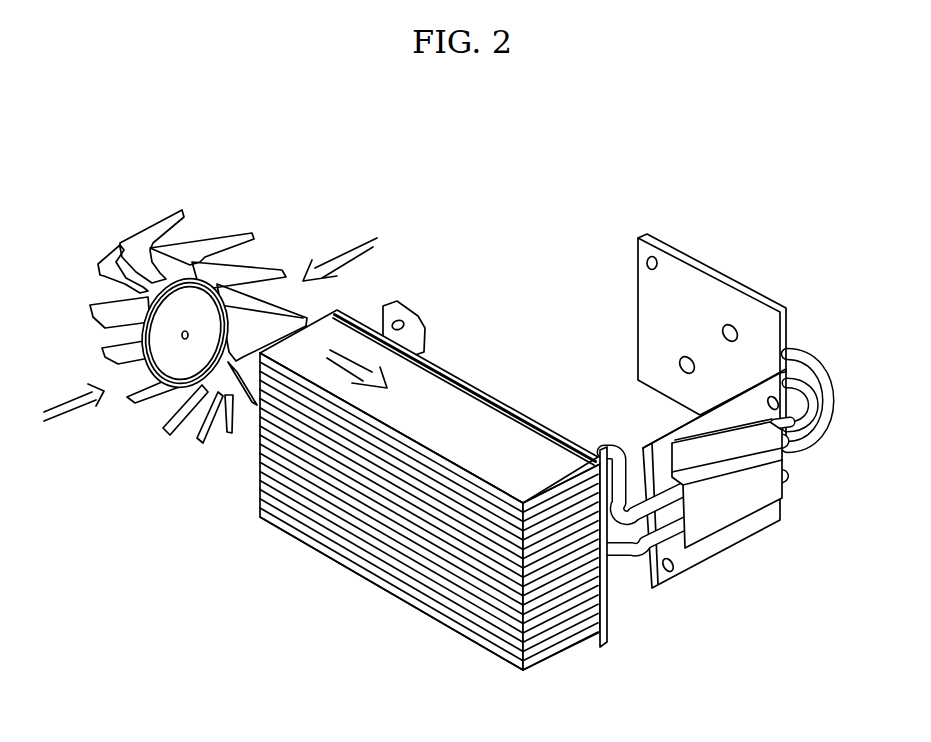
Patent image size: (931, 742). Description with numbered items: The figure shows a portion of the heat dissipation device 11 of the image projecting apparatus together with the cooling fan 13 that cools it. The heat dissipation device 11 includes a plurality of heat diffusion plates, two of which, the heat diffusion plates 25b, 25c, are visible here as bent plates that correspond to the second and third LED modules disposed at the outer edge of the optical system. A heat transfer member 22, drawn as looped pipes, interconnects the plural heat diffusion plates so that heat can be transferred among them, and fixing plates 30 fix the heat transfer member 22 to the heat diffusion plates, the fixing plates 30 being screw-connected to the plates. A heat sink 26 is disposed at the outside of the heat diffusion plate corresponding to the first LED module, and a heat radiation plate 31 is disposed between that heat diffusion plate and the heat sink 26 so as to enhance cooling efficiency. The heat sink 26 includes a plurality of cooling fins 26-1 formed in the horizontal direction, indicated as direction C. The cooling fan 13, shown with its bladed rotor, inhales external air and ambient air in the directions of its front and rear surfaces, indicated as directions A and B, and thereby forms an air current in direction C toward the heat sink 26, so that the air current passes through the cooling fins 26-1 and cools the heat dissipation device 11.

The heat dissipation device 11 is at (757, 162).
The cooling fan 13 is at (262, 222).
The heat transfer member 22 is at (828, 443).
The heat diffusion plate 25b is at (643, 290).
The heat diffusion plate 25c is at (657, 443).
The heat sink 26 is at (356, 600).
The cooling fins 26-1 is at (310, 510).
The fixing plates 30 is at (727, 510).
The heat radiation plate 31 is at (500, 385).